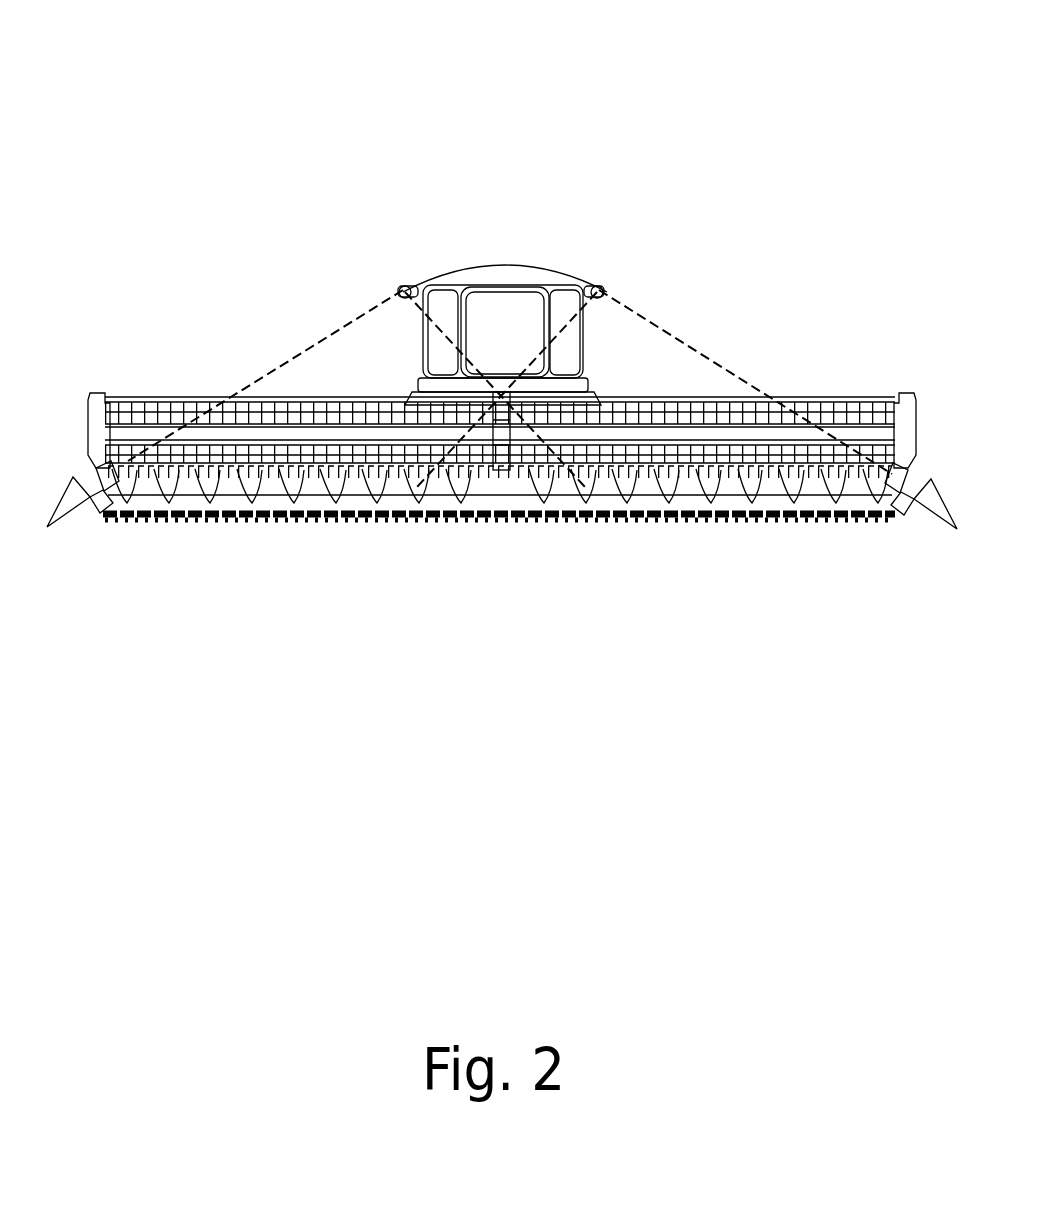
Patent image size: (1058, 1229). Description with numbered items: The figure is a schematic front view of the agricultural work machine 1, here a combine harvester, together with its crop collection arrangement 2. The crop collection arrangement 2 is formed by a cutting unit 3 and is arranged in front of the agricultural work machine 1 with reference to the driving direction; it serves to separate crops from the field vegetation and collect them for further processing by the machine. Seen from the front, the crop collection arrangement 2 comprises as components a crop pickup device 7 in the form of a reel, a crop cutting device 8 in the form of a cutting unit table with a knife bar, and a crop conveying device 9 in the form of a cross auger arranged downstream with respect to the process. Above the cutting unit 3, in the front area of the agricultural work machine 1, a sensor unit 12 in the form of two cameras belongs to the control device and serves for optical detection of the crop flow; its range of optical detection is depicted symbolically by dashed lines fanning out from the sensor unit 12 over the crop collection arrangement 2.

The agricultural work machine 1 is at (716, 160).
The crop collection arrangement 2 is at (808, 356).
The cutting unit 3 is at (502, 453).
The crop pickup device 7 is at (178, 396).
The crop cutting device 8 is at (398, 512).
The crop conveying device 9 is at (268, 520).
The sensor unit 12 is at (598, 291).